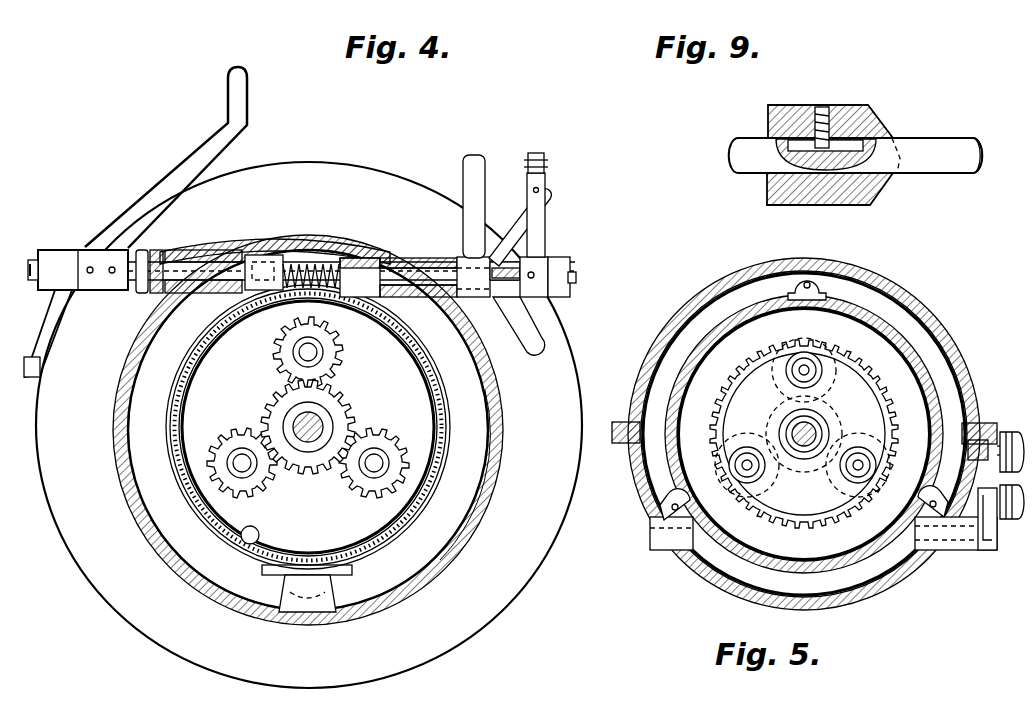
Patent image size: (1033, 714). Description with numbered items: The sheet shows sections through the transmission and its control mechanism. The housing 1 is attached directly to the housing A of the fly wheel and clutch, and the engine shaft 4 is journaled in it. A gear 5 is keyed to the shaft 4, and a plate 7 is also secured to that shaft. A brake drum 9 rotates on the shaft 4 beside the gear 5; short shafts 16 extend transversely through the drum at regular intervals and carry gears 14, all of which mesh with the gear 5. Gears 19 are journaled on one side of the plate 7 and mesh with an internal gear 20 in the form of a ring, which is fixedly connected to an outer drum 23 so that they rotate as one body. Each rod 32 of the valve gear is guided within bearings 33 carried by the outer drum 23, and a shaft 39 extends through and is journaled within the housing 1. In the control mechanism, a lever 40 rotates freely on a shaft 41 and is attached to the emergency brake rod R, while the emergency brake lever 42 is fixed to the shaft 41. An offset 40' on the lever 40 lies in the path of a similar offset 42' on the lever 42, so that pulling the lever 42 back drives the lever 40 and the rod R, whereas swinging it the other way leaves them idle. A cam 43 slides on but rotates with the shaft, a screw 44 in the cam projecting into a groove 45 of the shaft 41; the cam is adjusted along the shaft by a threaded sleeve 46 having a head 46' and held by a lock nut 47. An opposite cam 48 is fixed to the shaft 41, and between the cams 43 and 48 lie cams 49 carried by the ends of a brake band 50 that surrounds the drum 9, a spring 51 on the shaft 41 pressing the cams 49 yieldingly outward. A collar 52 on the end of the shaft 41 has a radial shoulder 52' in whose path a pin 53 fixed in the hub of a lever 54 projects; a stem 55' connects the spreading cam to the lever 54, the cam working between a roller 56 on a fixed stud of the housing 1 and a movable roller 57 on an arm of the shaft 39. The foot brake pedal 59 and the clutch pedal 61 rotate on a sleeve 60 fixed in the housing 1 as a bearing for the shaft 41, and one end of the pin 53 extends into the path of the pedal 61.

In FIG. 4, the housing of the fly wheel and clutch A is at (505, 583).
In FIG. 4, the housing 1 is at (119, 405).
In FIG. 5, the housing 1 is at (865, 273).
In FIG. 4, the engine shaft 4 is at (300, 420).
In FIG. 5, the engine shaft 4 is at (808, 440).
In FIG. 4, the gear 5 is at (350, 409).
In FIG. 5, the plate 7 is at (782, 495).
In FIG. 4, the brake drum 9 is at (247, 543).
In FIG. 4, the gears 14 is at (345, 353).
In FIG. 4, the shafts 16 is at (304, 352).
In FIG. 5, the gears 19 is at (729, 466).
In FIG. 5, the internal gear 20 is at (907, 342).
In FIG. 5, the outer drum 23 is at (890, 357).
In FIG. 5, the rod 32 is at (800, 280).
In FIG. 5, the bearings 33 is at (816, 284).
In FIG. 5, the shaft 39 is at (908, 550).
In FIG. 4, the lever 40 is at (64, 313).
In FIG. 4, the offset 40' is at (56, 241).
In FIG. 4, the shaft 41 is at (134, 266).
In FIG. 9, the shaft 41 is at (928, 137).
In FIG. 4, the emergency brake lever 42 is at (166, 157).
In FIG. 4, the offset 42' is at (84, 291).
In FIG. 4, the cam 43 is at (268, 255).
In FIG. 9, the cam 43 is at (870, 108).
In FIG. 9, the screw 44 is at (819, 107).
In FIG. 9, the groove 45 is at (790, 138).
In FIG. 4, the threaded sleeve 46 is at (203, 254).
In FIG. 4, the head 46' is at (124, 297).
In FIG. 4, the lock nut 47 is at (158, 294).
In FIG. 4, the cam 48 is at (376, 258).
In FIG. 4, the cams 49 is at (341, 262).
In FIG. 4, the brake band 50 is at (196, 489).
In FIG. 4, the spring 51 is at (300, 297).
In FIG. 4, the collar 52 is at (562, 268).
In FIG. 4, the radial shoulder 52' is at (574, 260).
In FIG. 4, the pin 53 is at (568, 290).
In FIG. 4, the lever 54 is at (538, 228).
In FIG. 4, the stem 55' is at (554, 147).
In FIG. 5, the roller 56 is at (1010, 432).
In FIG. 5, the movable roller 57 is at (1016, 516).
In FIG. 4, the foot brake pedal 59 is at (473, 180).
In FIG. 4, the sleeve 60 is at (437, 298).
In FIG. 4, the clutch pedal 61 is at (523, 222).
In FIG. 4, the emergency brake rod R is at (27, 381).